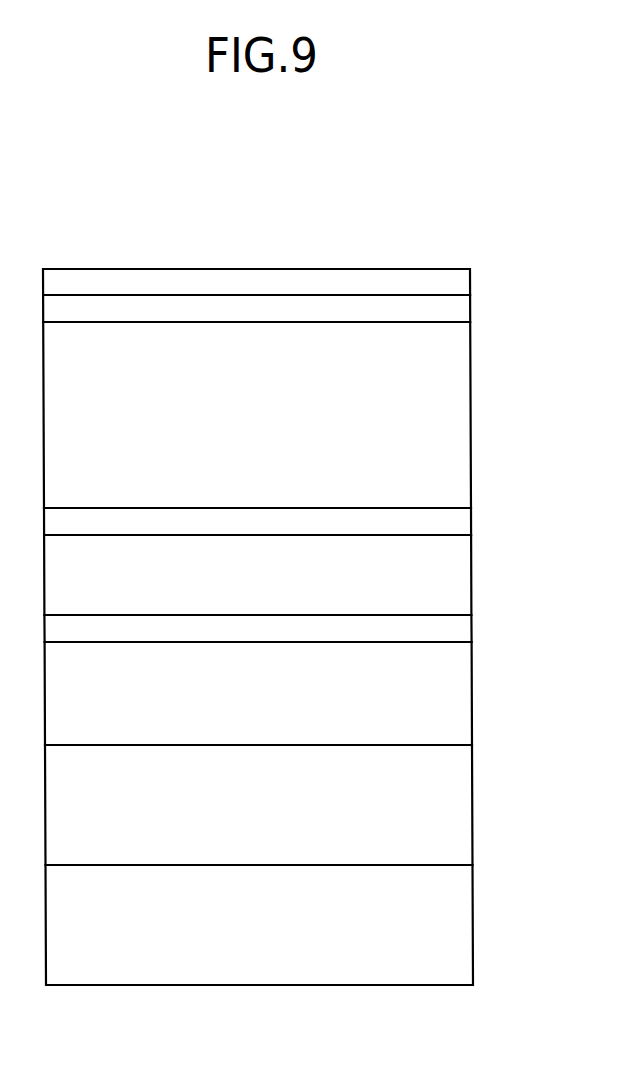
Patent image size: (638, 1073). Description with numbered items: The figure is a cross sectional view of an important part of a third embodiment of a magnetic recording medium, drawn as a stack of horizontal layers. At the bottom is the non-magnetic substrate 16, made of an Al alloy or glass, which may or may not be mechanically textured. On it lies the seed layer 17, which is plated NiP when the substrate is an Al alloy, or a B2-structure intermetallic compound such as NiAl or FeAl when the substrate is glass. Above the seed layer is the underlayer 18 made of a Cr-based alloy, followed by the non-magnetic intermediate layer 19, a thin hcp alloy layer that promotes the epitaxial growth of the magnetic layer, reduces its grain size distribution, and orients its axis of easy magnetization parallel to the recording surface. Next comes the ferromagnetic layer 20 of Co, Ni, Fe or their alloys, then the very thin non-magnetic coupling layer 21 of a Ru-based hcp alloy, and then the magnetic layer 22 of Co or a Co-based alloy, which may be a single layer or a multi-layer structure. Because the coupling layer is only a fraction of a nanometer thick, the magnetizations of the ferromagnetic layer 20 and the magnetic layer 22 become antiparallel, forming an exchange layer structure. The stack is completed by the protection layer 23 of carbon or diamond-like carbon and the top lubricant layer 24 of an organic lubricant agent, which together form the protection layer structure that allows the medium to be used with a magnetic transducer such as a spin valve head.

The non-magnetic substrate 16 is at (455, 925).
The seed layer 17 is at (455, 810).
The underlayer 18 is at (455, 691).
The non-magnetic intermediate layer 19 is at (455, 629).
The ferromagnetic layer 20 is at (455, 575).
The non-magnetic coupling layer 21 is at (455, 522).
The magnetic layer 22 is at (455, 413).
The protection layer 23 is at (455, 309).
The lubricant layer 24 is at (455, 283).